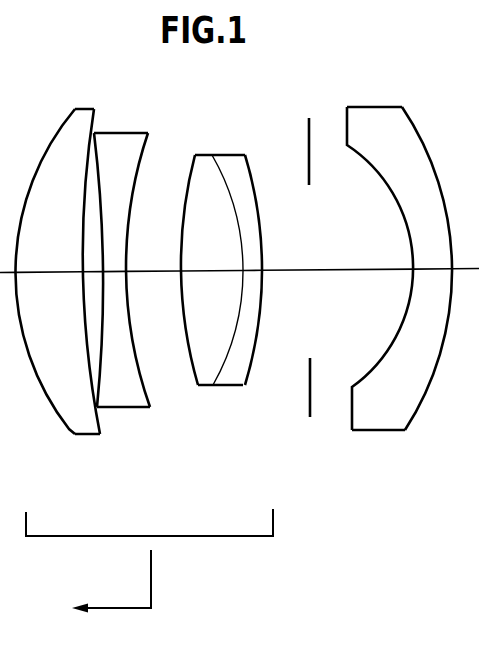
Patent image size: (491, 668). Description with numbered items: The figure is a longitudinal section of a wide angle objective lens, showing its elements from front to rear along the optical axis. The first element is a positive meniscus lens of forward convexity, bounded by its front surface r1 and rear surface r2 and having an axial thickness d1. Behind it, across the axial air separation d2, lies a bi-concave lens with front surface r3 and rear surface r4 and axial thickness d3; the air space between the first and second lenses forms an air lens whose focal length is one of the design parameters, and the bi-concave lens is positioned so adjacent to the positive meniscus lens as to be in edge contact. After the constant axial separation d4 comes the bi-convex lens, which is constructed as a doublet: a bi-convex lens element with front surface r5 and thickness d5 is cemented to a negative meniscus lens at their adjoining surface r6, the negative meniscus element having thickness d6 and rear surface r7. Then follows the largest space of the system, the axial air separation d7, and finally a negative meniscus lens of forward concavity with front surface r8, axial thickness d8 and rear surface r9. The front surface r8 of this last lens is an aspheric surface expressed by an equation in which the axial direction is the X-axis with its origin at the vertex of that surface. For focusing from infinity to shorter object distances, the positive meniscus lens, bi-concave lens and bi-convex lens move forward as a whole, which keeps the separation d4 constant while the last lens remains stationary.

The first lens surface r1 is at (68, 428).
The second lens surface r2 is at (97, 393).
The third lens surface r3 is at (98, 407).
The fourth lens surface r4 is at (145, 395).
The fifth lens surface r5 is at (198, 377).
The sixth lens surface r6 is at (220, 373).
The seventh lens surface r7 is at (245, 377).
The eighth lens surface r8 is at (355, 383).
The ninth lens surface r9 is at (422, 403).
The axial thickness of the first lens d1 is at (58, 271).
The axial air separation between the first and second lenses d2 is at (92, 272).
The axial thickness of the second lens d3 is at (140, 133).
The axial air separation between the second and third lenses d4 is at (153, 260).
The axial thickness of the third lens element d5 is at (213, 270).
The axial thickness of the fourth lens element d6 is at (252, 268).
The axial air separation between the third and fourth lenses d7 is at (337, 267).
The axial thickness of the last lens d8 is at (399, 268).